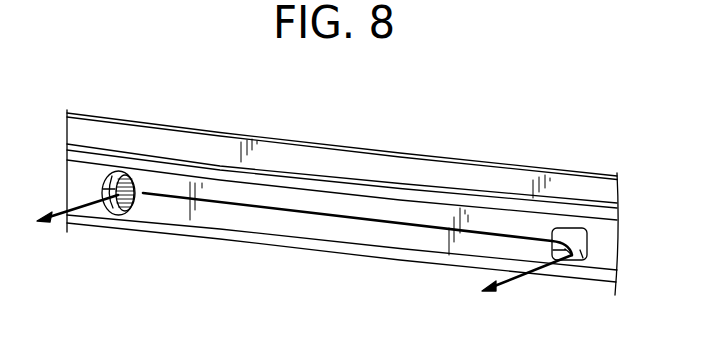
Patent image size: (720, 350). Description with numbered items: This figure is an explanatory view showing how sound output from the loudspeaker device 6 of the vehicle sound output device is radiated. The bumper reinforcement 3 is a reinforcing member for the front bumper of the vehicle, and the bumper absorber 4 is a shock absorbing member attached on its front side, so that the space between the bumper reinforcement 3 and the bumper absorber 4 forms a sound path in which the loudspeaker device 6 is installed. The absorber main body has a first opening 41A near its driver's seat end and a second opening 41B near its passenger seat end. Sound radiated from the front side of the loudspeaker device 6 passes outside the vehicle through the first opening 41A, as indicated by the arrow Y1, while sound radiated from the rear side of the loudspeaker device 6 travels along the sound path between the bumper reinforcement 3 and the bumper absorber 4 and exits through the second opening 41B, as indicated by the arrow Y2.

The bumper reinforcement 3 is at (568, 187).
The bumper absorber 4 is at (315, 227).
The loudspeaker device 6 is at (122, 174).
The first opening 41A is at (118, 214).
The second opening 41B is at (587, 243).
The arrow Y1 is at (63, 207).
The arrow Y2 is at (508, 235).